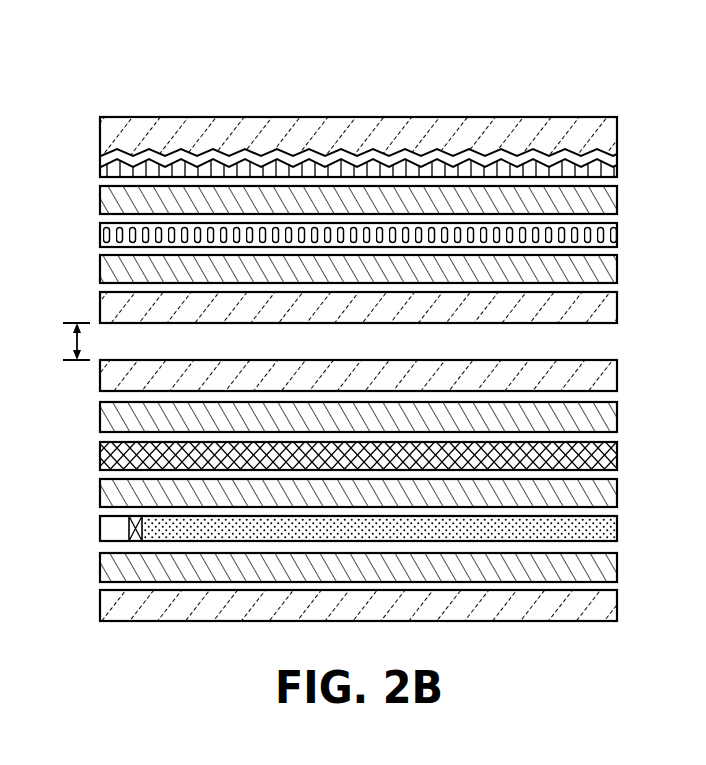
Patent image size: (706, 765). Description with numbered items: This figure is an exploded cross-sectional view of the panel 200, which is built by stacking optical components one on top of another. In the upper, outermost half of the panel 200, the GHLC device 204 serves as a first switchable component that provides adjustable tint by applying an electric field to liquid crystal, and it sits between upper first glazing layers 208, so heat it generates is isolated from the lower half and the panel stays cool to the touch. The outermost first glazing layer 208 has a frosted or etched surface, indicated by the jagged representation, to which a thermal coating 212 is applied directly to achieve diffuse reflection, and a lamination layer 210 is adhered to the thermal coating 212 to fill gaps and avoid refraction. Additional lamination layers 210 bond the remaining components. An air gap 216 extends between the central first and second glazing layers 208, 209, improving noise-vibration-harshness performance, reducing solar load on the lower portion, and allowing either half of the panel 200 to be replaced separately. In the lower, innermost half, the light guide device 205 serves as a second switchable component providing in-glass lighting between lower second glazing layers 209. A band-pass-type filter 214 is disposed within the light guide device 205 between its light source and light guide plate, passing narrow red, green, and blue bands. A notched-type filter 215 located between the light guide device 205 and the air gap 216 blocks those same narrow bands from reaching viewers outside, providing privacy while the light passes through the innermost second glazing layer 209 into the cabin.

The panel 200 is at (84, 95).
The GHLC device 204 is at (617, 234).
The light guide device 205 is at (617, 527).
The first glazing layer 208 is at (617, 122).
The second glazing layer 209 is at (617, 369).
The lamination layer 210 is at (617, 199).
The thermal coating 212 is at (617, 171).
The filter 214 is at (128, 531).
The filter 215 is at (617, 454).
The air gap 216 is at (68, 324).